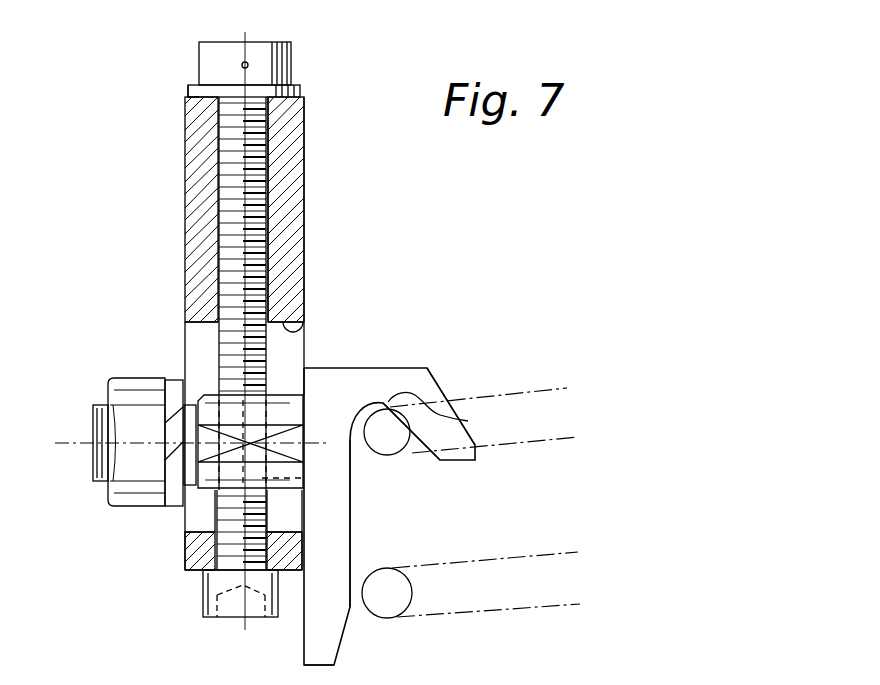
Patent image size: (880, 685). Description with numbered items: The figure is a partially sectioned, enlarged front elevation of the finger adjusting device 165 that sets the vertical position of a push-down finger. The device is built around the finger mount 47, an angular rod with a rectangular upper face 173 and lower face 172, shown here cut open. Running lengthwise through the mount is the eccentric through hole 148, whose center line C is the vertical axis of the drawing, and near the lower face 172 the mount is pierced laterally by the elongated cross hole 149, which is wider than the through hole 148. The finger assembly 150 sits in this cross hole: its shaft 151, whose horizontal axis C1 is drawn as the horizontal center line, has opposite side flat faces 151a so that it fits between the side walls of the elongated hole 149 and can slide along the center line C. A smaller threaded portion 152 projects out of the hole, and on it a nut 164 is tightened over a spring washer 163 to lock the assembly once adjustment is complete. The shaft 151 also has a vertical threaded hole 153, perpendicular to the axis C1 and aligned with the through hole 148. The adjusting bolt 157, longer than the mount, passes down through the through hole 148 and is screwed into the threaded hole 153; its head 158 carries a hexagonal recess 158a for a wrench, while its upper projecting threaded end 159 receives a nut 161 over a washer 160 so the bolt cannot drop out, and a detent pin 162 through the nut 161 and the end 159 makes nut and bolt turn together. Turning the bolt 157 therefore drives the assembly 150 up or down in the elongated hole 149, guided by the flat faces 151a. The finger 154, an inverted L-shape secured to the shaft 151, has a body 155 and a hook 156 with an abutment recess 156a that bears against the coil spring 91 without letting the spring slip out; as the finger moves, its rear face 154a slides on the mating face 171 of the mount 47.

The finger mount 47 is at (304, 115).
The coil spring 91 is at (556, 380).
The eccentric through hole 148 is at (256, 194).
The elongated cross hole 149 is at (306, 325).
The finger assembly 150 is at (277, 393).
The shaft 151 is at (299, 411).
The side flat faces 151a is at (192, 496).
The threaded portion 152 is at (90, 418).
The threaded hole 153 is at (303, 478).
The push-down finger 154 is at (408, 368).
The rear face 154a is at (304, 632).
The body 155 is at (352, 522).
The hook 156 is at (431, 389).
The abutment recess 156a is at (451, 409).
The adjusting bolt 157 is at (230, 188).
The head 158 is at (212, 590).
The hexagonal recess 158a is at (220, 613).
The upper projecting threaded end 159 is at (279, 108).
The washer 160 is at (301, 93).
The nut 161 is at (292, 52).
The detent pin 162 is at (244, 63).
The spring washer 163 is at (175, 379).
The nut 164 is at (131, 378).
The finger adjusting device 165 is at (185, 115).
The mating face 171 is at (305, 238).
The lower face 172 is at (195, 573).
The upper face 173 is at (191, 86).
The center line C is at (243, 144).
The horizontal axis C1 is at (78, 440).